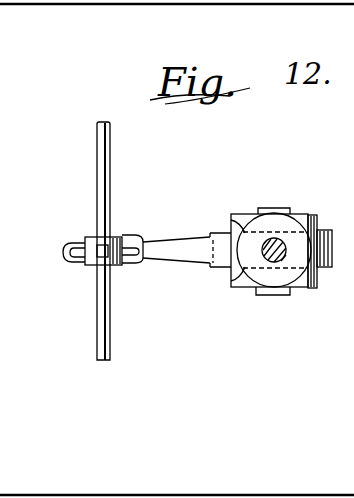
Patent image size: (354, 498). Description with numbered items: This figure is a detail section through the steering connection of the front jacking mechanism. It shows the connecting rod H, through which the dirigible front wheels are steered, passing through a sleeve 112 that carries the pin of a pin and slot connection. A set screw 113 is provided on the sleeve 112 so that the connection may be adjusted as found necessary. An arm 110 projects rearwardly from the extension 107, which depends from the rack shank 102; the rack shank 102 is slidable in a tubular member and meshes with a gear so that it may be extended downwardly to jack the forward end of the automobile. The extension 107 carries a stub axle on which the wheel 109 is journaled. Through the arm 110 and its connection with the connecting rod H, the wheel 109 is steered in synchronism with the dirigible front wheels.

The connecting rod H is at (107, 187).
The sleeve 112 is at (88, 238).
The set screw 113 is at (112, 240).
The arm 110 is at (172, 252).
The extension 107 is at (268, 222).
The rack shank 102 is at (278, 243).
The wheel 109 is at (323, 268).